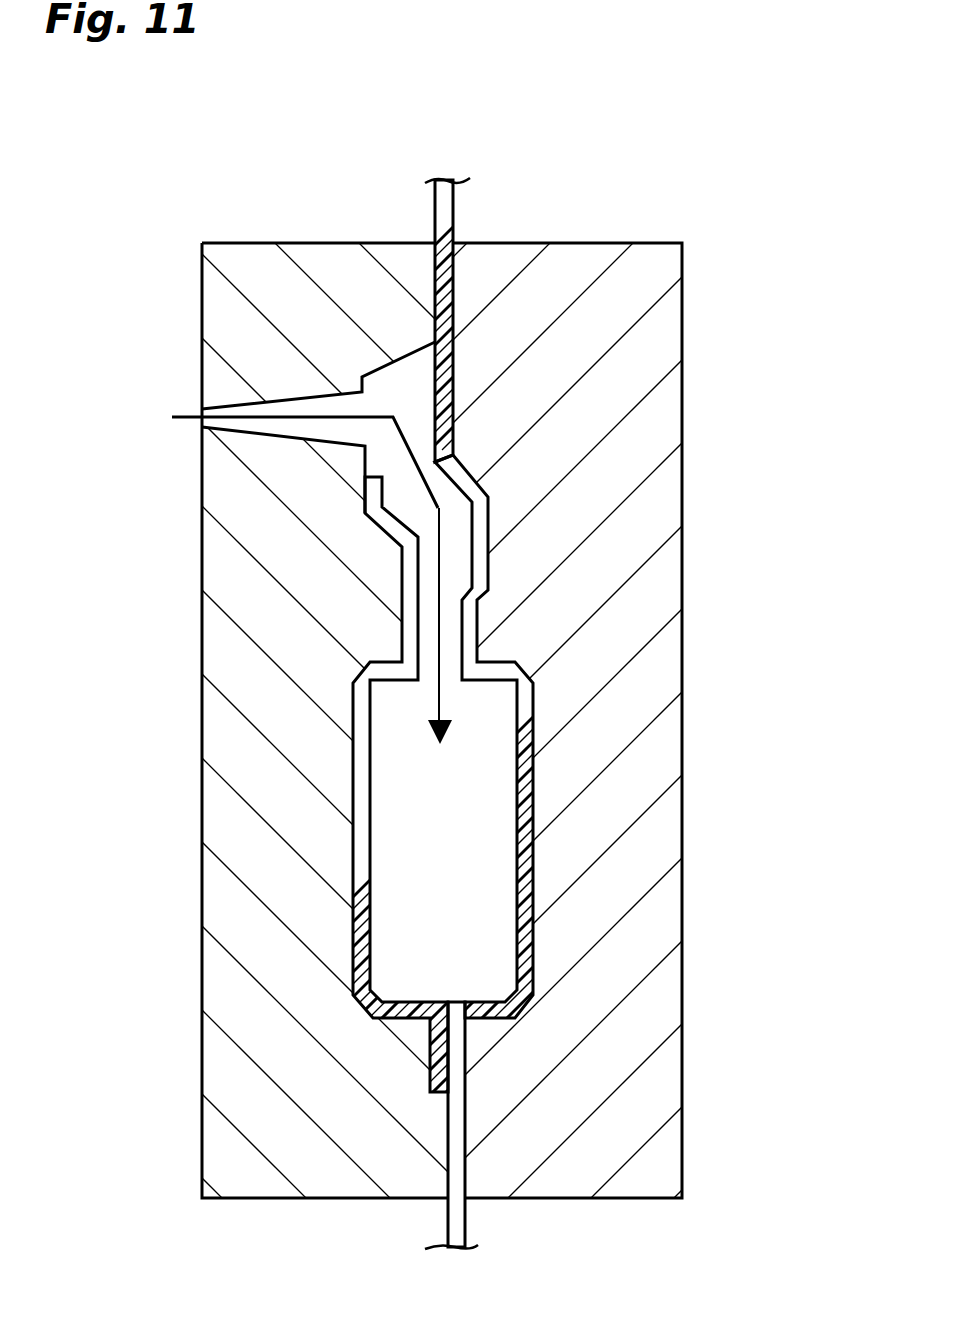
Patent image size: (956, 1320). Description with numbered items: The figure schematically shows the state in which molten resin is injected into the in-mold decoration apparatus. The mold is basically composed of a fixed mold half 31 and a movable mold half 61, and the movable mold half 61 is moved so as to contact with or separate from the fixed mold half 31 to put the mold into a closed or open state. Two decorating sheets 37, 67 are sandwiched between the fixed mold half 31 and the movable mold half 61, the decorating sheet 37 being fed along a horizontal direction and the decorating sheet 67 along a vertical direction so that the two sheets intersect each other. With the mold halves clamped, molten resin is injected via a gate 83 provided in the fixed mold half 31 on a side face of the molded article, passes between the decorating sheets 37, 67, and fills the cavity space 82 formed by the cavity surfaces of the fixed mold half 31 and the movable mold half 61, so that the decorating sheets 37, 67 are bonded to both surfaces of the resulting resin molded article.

The fixed mold half 31 is at (217, 583).
The decorating sheet 37 is at (362, 843).
The movable mold half 61 is at (650, 603).
The decorating sheet 67 is at (527, 890).
The cavity space 82 is at (485, 773).
The gate 83 is at (398, 380).